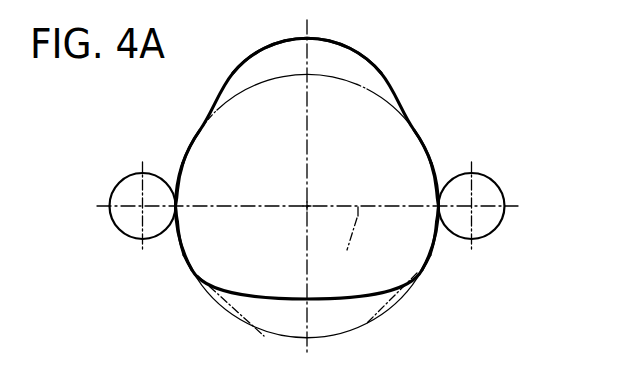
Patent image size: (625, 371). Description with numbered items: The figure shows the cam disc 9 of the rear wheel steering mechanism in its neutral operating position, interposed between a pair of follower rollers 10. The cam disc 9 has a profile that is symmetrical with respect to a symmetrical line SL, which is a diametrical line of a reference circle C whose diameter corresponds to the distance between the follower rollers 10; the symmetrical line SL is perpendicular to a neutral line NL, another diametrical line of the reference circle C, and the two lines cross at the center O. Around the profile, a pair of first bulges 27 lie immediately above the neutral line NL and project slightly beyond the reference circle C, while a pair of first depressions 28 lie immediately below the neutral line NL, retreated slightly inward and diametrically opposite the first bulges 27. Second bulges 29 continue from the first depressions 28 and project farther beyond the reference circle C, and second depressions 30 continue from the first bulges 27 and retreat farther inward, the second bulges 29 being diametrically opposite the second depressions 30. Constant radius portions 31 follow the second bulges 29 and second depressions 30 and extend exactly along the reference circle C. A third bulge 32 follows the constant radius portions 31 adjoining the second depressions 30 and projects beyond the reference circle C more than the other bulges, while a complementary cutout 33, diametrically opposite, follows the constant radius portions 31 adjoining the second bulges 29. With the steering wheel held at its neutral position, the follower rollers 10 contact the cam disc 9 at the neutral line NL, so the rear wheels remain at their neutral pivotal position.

The cam disc 9 is at (367, 74).
The follower rollers 10 is at (113, 193).
The first bulges 27 is at (172, 190).
The first depressions 28 is at (180, 212).
The second bulges 29 is at (182, 256).
The second depressions 30 is at (182, 172).
The constant radius portions 31 is at (186, 140).
The third bulge 32 is at (398, 87).
The cutout 33 is at (233, 320).
The symmetrical line SL is at (311, 57).
The neutral line NL is at (354, 249).
The reference circle C is at (368, 326).
The center O is at (313, 197).